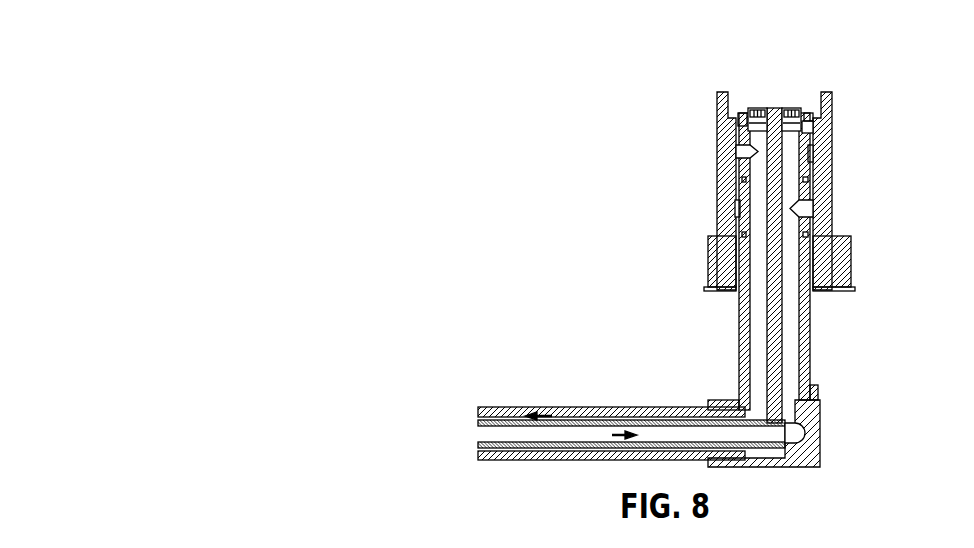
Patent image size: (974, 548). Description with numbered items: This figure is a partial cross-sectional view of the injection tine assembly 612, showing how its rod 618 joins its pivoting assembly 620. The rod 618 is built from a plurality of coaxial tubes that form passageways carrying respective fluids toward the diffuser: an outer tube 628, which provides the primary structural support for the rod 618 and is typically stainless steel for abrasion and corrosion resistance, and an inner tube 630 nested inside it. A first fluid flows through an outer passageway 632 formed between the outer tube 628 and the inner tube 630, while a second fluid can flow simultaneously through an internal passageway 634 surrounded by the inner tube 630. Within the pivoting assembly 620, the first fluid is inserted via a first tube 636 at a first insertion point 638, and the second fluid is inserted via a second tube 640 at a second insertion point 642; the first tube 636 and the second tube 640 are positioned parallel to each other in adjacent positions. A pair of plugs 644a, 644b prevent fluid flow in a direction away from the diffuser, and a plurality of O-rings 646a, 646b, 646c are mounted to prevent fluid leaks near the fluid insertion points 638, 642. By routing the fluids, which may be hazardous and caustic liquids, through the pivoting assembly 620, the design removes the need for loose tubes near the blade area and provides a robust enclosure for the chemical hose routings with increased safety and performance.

The injection tine assembly 612 is at (615, 105).
The rod 618 is at (635, 375).
The pivoting assembly 620 is at (854, 153).
The outer tube 628 is at (477, 412).
The inner tube 630 is at (477, 425).
The outer passageway 632 is at (512, 415).
The internal passageway 634 is at (625, 435).
The first tube 636 is at (751, 242).
The first insertion point 638 is at (736, 152).
The second tube 640 is at (797, 338).
The second insertion point 642 is at (812, 208).
The plug 644a is at (758, 104).
The plug 644b is at (790, 104).
The O-ring 646a is at (814, 124).
The O-ring 646b is at (808, 179).
The O-ring 646c is at (808, 233).